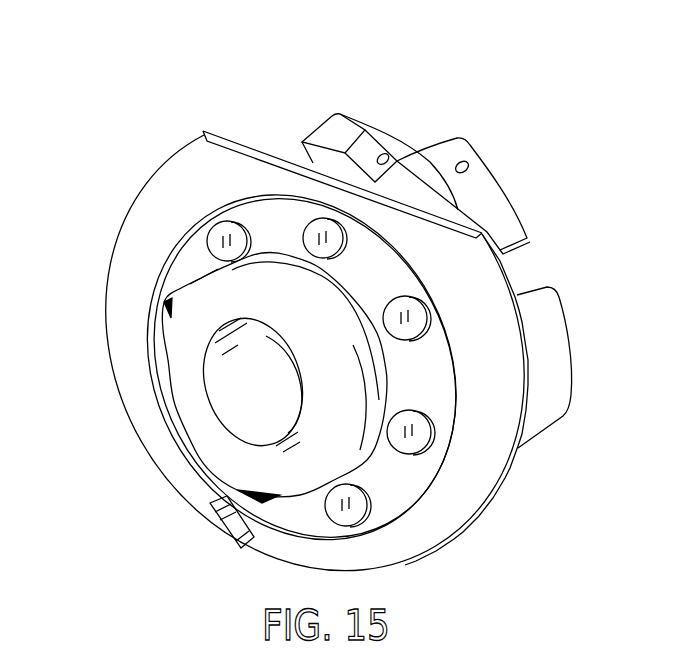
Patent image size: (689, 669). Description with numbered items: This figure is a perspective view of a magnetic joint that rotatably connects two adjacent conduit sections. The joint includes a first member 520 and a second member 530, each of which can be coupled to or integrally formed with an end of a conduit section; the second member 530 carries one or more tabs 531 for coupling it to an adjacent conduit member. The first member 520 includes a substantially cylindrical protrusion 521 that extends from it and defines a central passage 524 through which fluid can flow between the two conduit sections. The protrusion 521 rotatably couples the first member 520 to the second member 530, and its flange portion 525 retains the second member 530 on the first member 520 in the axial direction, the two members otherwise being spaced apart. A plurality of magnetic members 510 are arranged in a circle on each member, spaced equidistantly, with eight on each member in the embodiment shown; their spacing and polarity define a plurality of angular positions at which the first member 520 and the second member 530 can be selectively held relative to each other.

The magnetic members 510 is at (308, 232).
The first member 520 is at (433, 178).
The protrusion 521 is at (237, 421).
The central passage 524 is at (202, 396).
The flange portion 525 is at (183, 327).
The second member 530 is at (158, 203).
The tabs 531 is at (332, 122).